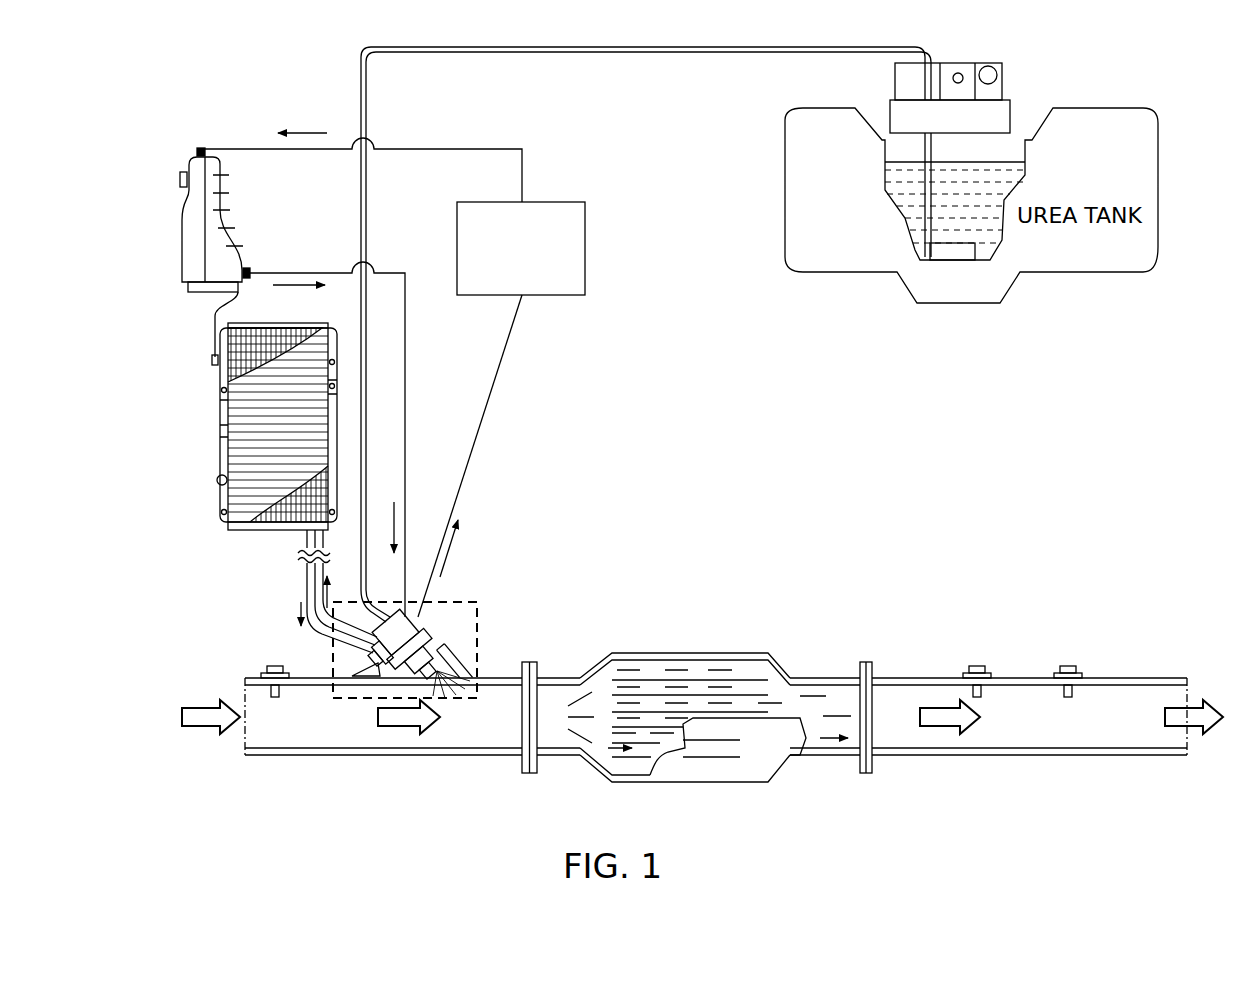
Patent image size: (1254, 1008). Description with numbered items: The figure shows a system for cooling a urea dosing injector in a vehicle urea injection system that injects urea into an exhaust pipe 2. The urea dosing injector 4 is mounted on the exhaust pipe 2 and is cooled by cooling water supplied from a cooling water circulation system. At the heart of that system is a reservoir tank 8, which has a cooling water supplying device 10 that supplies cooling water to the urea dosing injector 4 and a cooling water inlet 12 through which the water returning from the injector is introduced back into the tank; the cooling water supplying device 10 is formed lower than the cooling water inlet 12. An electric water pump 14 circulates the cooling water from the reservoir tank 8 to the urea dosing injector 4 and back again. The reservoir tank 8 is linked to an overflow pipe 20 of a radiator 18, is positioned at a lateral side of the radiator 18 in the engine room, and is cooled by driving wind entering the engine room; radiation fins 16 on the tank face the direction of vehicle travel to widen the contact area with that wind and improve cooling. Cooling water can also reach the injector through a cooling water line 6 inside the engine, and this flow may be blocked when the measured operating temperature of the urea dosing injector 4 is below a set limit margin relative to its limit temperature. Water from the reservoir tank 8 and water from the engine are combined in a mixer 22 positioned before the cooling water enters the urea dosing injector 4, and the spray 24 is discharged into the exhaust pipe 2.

The exhaust pipe 2 is at (690, 653).
The urea dosing injector 4 is at (478, 596).
The cooling water line 6 is at (308, 580).
The reservoir tank 8 is at (182, 253).
The cooling water supplying device 10 is at (251, 267).
The cooling water inlet 12 is at (198, 146).
The electric water pump 14 is at (585, 247).
The radiation fins 16 is at (221, 192).
The radiator 18 is at (247, 448).
The overflow pipe 20 is at (214, 333).
The mixer 22 is at (397, 657).
The urea spray nozzle 24 is at (438, 684).